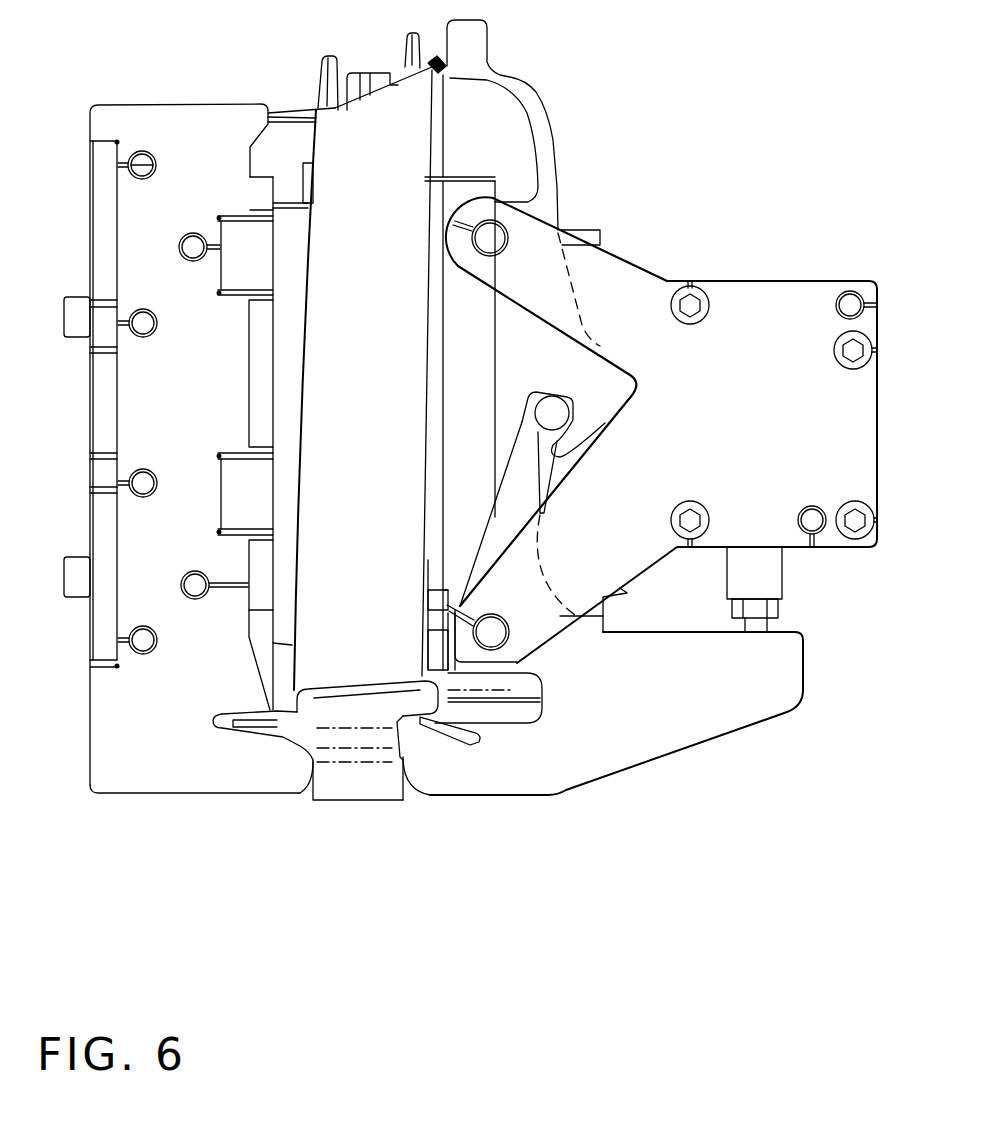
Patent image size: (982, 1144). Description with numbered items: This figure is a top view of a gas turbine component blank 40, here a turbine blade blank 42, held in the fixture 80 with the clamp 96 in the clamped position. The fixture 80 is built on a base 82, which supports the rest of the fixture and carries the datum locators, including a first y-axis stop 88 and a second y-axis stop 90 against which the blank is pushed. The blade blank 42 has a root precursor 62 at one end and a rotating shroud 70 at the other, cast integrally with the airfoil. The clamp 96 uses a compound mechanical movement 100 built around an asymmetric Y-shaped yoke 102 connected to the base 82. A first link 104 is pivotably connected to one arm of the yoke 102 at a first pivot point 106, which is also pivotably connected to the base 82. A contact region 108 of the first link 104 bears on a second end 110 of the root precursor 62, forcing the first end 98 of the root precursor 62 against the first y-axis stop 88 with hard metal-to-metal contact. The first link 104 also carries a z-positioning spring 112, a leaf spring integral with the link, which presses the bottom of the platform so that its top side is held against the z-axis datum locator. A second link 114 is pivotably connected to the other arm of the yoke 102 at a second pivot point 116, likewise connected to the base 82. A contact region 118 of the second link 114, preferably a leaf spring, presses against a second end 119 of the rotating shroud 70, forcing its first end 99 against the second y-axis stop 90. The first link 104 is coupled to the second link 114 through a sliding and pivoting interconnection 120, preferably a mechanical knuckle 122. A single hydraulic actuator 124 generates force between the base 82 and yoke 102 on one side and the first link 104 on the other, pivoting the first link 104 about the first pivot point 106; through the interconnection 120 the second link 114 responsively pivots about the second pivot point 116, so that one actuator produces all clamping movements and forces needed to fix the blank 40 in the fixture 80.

The gas turbine component blank 40 is at (341, 364).
The turbine blade blank 42 is at (318, 415).
The root precursor 62 is at (330, 787).
The rotating shroud 70 is at (333, 112).
The fixture 80 is at (88, 692).
The base 82 is at (122, 730).
The first y-axis stop 88 is at (318, 762).
The second y-axis stop 90 is at (268, 122).
The clamp 96 is at (650, 729).
The first end of the root precursor 98 is at (307, 790).
The first end of the rotating shroud 99 is at (278, 113).
The compound mechanical movement 100 is at (521, 353).
The asymmetric Y-shaped yoke 102 is at (677, 462).
The first link 104 is at (578, 772).
The first pivot point 106 is at (489, 627).
The contact region of the first link 108 is at (402, 790).
The second end of the root precursor 110 is at (407, 785).
The z-positioning spring 112 is at (435, 728).
The second link 114 is at (557, 146).
The second pivot point 116 is at (490, 243).
The contact region of the second link 118 is at (442, 58).
The second end of the rotating shroud 119 is at (437, 72).
The sliding and pivoting interconnection 120 is at (502, 400).
The mechanical knuckle 122 is at (549, 407).
The hydraulic actuator 124 is at (768, 573).